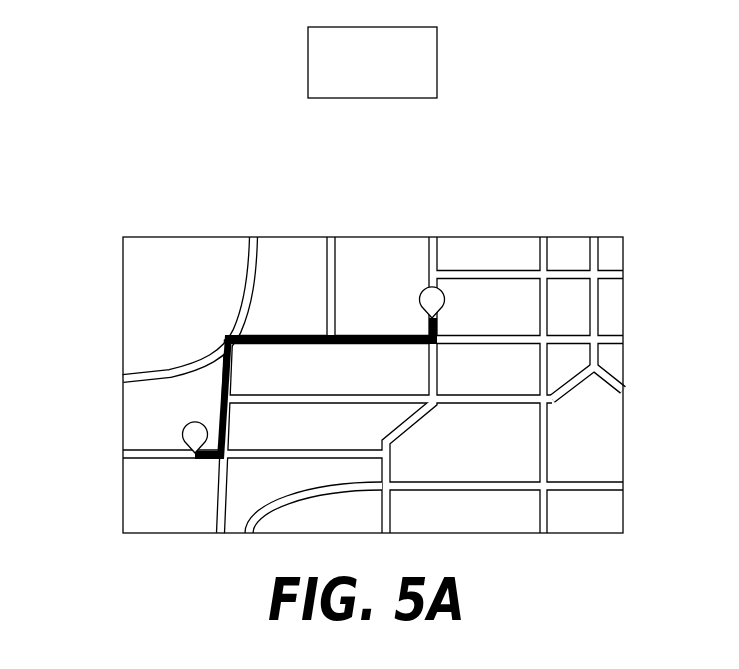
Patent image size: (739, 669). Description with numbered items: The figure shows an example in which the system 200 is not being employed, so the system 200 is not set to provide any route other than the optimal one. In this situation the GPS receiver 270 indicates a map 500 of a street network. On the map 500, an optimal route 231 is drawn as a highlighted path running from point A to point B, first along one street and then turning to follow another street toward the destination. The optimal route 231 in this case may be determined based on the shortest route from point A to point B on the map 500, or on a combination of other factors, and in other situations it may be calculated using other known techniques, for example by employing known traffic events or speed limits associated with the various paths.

The system 200 is at (388, 70).
The GPS receiver 270 is at (326, 382).
The map 500 is at (373, 385).
The optimal route 231 is at (195, 455).